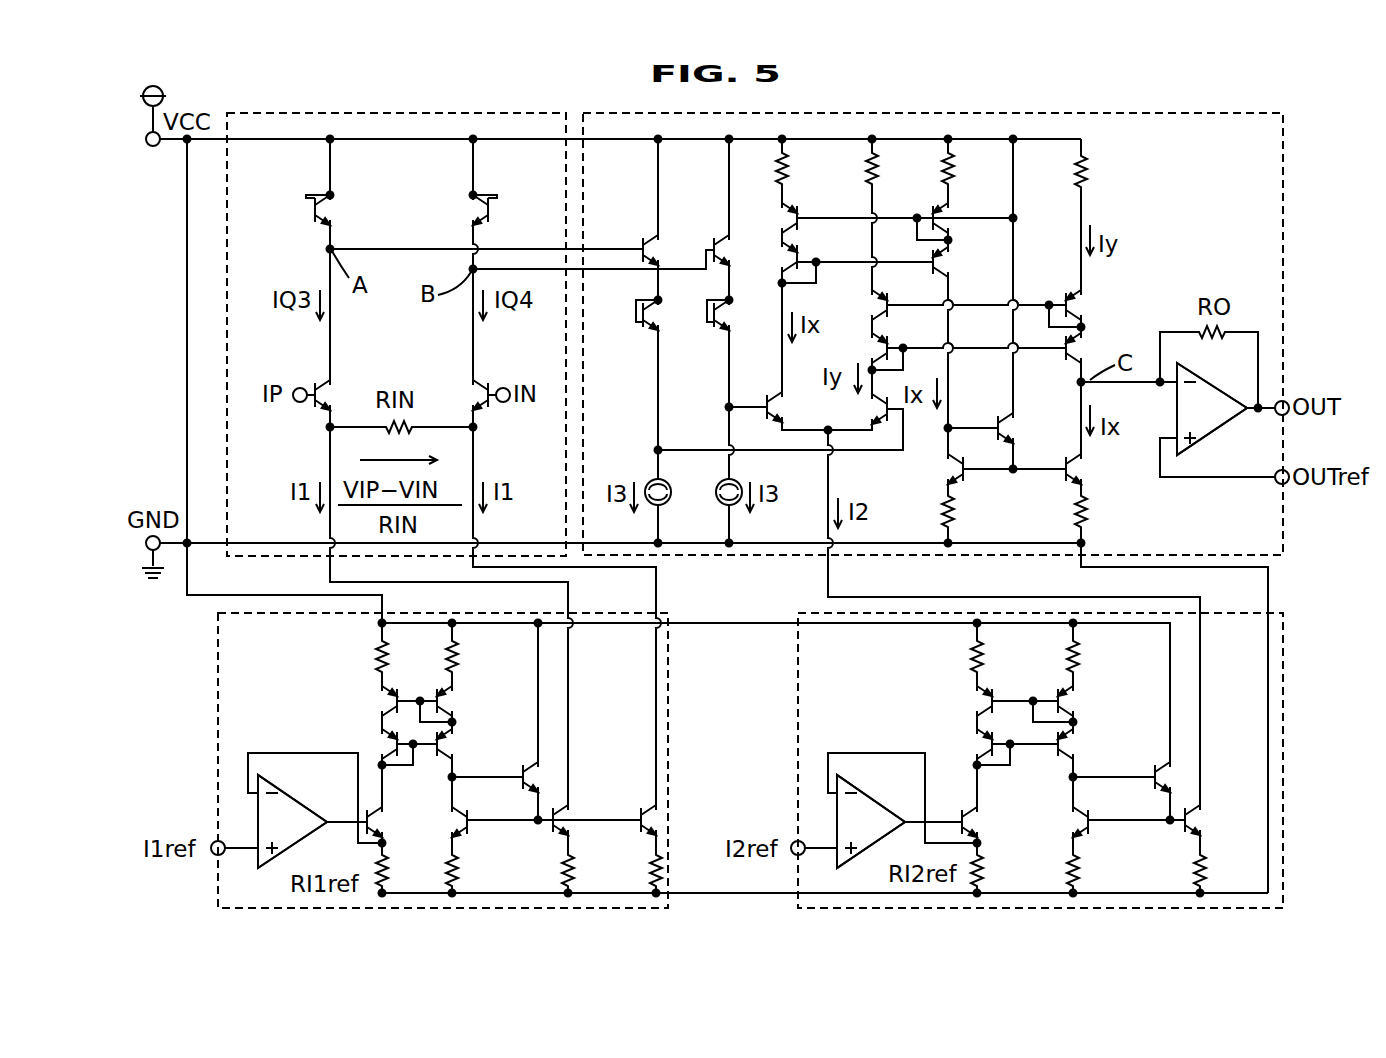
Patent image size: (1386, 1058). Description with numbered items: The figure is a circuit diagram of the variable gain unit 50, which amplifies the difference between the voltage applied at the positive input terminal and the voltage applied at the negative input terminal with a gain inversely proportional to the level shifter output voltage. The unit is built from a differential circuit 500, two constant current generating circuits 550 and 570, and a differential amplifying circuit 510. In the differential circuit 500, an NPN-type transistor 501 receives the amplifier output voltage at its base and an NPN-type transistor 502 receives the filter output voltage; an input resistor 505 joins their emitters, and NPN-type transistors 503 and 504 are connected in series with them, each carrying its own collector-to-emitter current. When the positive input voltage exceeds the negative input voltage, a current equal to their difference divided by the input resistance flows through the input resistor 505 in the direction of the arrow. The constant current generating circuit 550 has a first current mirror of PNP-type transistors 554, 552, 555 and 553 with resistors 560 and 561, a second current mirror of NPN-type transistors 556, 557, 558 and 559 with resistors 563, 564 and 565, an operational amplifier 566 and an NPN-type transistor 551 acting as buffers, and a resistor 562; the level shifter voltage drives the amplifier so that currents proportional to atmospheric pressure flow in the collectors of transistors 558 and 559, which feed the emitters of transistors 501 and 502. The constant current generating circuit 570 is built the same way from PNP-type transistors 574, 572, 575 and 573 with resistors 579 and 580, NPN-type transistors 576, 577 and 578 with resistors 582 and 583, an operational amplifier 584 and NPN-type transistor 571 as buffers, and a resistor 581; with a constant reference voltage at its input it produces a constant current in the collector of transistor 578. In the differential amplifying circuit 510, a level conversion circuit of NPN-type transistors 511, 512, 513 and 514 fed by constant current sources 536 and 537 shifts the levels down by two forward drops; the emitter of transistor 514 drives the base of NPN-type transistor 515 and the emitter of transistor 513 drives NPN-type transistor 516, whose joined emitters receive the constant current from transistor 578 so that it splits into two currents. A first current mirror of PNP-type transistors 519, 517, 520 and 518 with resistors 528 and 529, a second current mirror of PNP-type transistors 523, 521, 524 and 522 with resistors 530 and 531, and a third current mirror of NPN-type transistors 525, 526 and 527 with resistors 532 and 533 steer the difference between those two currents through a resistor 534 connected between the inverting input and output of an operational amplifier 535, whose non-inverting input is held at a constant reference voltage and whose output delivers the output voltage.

The variable gain unit 50 is at (812, 103).
The differential circuit 500 is at (462, 113).
The differential amplifying circuit 510 is at (965, 113).
The constant current generating circuit 550 is at (218, 700).
The constant current generating circuit 570 is at (1283, 640).
The NPN-type transistor 501 is at (315, 383).
The NPN-type transistor 502 is at (490, 383).
The NPN-type transistor 503 is at (315, 232).
The NPN-type transistor 504 is at (490, 225).
The input resistor 505 is at (417, 423).
The NPN-type transistor 511 is at (642, 243).
The NPN-type transistor 512 is at (714, 242).
The NPN-type transistor 513 is at (643, 331).
The NPN-type transistor 514 is at (714, 331).
The NPN-type transistor 515 is at (767, 395).
The NPN-type transistor 516 is at (887, 405).
The PNP-type transistor 517 is at (800, 262).
The PNP-type transistor 518 is at (950, 275).
The PNP-type transistor 519 is at (797, 218).
The PNP-type transistor 520 is at (948, 228).
The PNP-type transistor 521 is at (882, 340).
The PNP-type transistor 522 is at (1083, 345).
The PNP-type transistor 523 is at (905, 290).
The PNP-type transistor 524 is at (1082, 300).
The NPN-type transistor 525 is at (998, 418).
The NPN-type transistor 526 is at (948, 468).
The NPN-type transistor 527 is at (1083, 468).
The resistor 528 is at (788, 168).
The resistor 529 is at (954, 178).
The resistor 530 is at (878, 185).
The resistor 531 is at (1088, 172).
The resistor 532 is at (958, 505).
The resistor 533 is at (1092, 508).
The resistor 534 is at (1228, 325).
The operational amplifier 535 is at (1228, 392).
The constant current source 536 is at (645, 483).
The constant current source 537 is at (716, 490).
The NPN-type transistor 551 is at (383, 830).
The PNP-type transistor 552 is at (382, 738).
The PNP-type transistor 553 is at (452, 745).
The PNP-type transistor 554 is at (382, 695).
The PNP-type transistor 555 is at (450, 690).
The NPN-type transistor 556 is at (523, 770).
The NPN-type transistor 557 is at (455, 812).
The NPN-type transistor 558 is at (553, 840).
The NPN-type transistor 559 is at (641, 812).
The resistor 560 is at (375, 645).
The resistor 561 is at (460, 645).
The resistor 562 is at (428, 860).
The resistor 563 is at (462, 875).
The resistor 564 is at (578, 875).
The resistor 565 is at (650, 868).
The operational amplifier 566 is at (290, 795).
The NPN-type transistor 571 is at (977, 810).
The PNP-type transistor 572 is at (977, 740).
The PNP-type transistor 573 is at (1080, 745).
The PNP-type transistor 574 is at (977, 698).
The PNP-type transistor 575 is at (1080, 692).
The NPN-type transistor 576 is at (1155, 772).
The NPN-type transistor 577 is at (1073, 828).
The NPN-type transistor 578 is at (1200, 812).
The resistor 579 is at (970, 645).
The resistor 580 is at (1080, 645).
The resistor 581 is at (985, 872).
The resistor 582 is at (1080, 868).
The resistor 583 is at (1230, 855).
The operational amplifier 584 is at (893, 808).